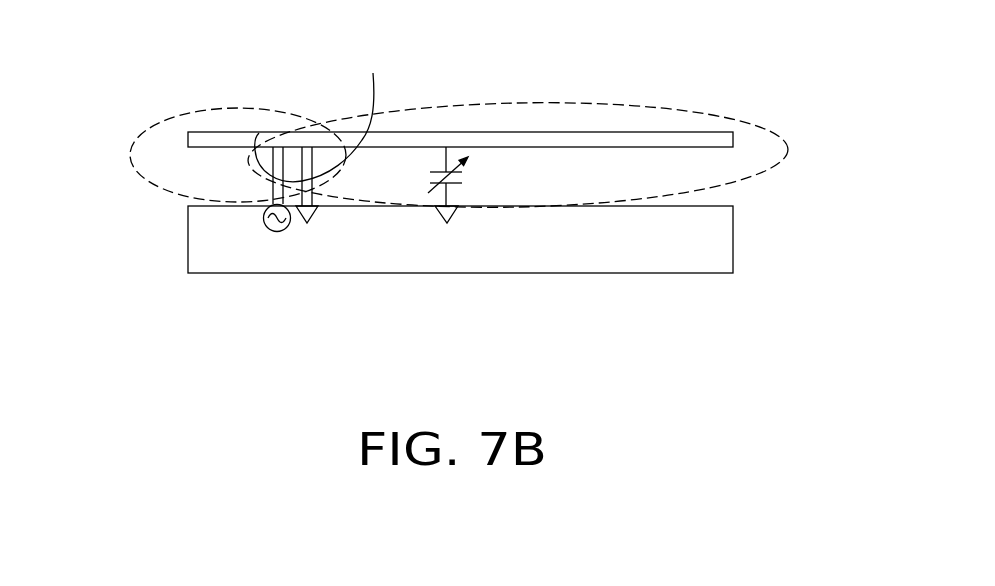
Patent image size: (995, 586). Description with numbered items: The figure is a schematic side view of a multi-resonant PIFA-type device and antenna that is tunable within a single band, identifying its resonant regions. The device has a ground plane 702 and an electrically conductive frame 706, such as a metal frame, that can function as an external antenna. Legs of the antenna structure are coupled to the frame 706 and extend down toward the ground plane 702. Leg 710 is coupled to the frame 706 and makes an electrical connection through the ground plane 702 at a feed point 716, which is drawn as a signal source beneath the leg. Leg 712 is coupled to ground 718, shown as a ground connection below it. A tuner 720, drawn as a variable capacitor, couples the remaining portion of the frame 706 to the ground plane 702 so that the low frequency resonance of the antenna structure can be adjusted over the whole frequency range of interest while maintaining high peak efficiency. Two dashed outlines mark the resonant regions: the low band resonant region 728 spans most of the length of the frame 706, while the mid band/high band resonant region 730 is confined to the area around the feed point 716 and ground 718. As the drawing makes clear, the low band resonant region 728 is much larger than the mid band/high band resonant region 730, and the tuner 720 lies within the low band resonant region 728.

The ground plane 702 is at (632, 252).
The electrically conductive frame 706 is at (653, 137).
The leg 710 is at (278, 188).
The leg 712 is at (326, 108).
The feed point 716 is at (268, 230).
The ground 718 is at (313, 212).
The tuner 720 is at (478, 183).
The low band resonant region 728 is at (766, 130).
The mid band/high band resonant region 730 is at (158, 123).